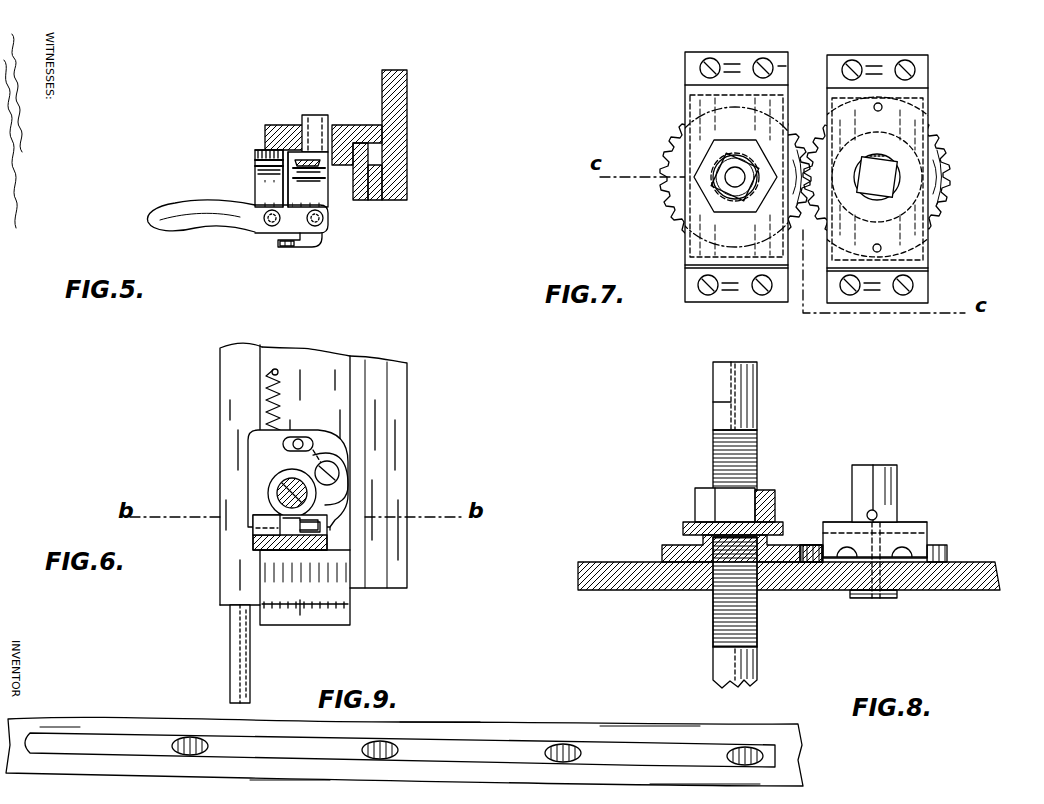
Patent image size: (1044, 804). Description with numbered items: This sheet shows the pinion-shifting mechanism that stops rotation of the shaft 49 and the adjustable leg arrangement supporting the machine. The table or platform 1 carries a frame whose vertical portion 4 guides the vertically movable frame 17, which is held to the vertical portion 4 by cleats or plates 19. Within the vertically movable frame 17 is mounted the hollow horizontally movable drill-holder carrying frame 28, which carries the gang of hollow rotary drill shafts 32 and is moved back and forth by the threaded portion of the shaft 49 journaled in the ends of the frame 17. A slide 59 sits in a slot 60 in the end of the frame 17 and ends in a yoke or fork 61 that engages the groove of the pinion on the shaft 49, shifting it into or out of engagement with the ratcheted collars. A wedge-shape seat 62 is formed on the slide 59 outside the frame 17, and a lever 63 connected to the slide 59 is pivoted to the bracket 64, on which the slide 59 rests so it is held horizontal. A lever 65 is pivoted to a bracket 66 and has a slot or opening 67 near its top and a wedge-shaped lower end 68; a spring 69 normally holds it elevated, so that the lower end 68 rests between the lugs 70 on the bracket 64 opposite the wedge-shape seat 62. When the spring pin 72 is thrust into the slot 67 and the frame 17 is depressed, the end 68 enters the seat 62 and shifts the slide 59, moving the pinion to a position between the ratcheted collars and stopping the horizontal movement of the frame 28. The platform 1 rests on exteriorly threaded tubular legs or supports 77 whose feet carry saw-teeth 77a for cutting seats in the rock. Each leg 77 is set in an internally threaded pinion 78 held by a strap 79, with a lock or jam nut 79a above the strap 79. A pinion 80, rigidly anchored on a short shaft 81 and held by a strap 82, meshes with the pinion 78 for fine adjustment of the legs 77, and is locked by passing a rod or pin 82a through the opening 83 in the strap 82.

In FIG. 8, the table or platform 1 is at (915, 586).
In FIG. 5, the vertical portion of the frame 4 is at (398, 122).
In FIG. 5, the vertically movable frame 17 is at (276, 125).
In FIG. 6, the vertically movable frame 17 is at (300, 365).
In FIG. 5, the cleats or plates 19 is at (362, 200).
In FIG. 6, the horizontally movable drill-holder carrying frame 28 is at (232, 355).
In FIG. 6, the hollow rotary drill shafts 32 is at (234, 644).
In FIG. 6, the shaft 49 is at (280, 494).
In FIG. 5, the slide 59 is at (314, 118).
In FIG. 6, the slide 59 is at (326, 541).
In FIG. 5, the slot 60 is at (334, 125).
In FIG. 5, the yoke or fork 61 is at (300, 246).
In FIG. 5, the wedge-shape seat 62 is at (300, 168).
In FIG. 6, the wedge-shape seat 62 is at (328, 521).
In FIG. 5, the lever 63 is at (238, 222).
In FIG. 5, the bracket 64 is at (256, 190).
In FIG. 6, the bracket 64 is at (292, 547).
In FIG. 6, the lever 65 is at (258, 456).
In FIG. 6, the bracket 66 is at (350, 482).
In FIG. 6, the slot or opening 67 is at (290, 443).
In FIG. 6, the lower wedge-shaped end 68 is at (268, 551).
In FIG. 6, the spring 69 is at (268, 396).
In FIG. 5, the lugs 70 is at (255, 170).
In FIG. 6, the lugs 70 is at (256, 524).
In FIG. 6, the spring pin 72 is at (326, 434).
In FIG. 7, the tubular legs or supports 77 is at (718, 180).
In FIG. 8, the tubular legs or supports 77 is at (757, 644).
In FIG. 8, the saw-teeth 77a is at (730, 686).
In FIG. 7, the internally screw-threaded pinion 78 is at (672, 156).
In FIG. 8, the internally screw-threaded pinion 78 is at (680, 550).
In FIG. 7, the strap 79 is at (690, 244).
In FIG. 8, the strap 79 is at (702, 522).
In FIG. 8, the lock or jam nut 79a is at (773, 490).
In FIG. 7, the pinion 80 is at (948, 176).
In FIG. 8, the pinion 80 is at (947, 553).
In FIG. 7, the short shaft 81 is at (882, 178).
In FIG. 8, the short shaft 81 is at (895, 500).
In FIG. 7, the strap 82 is at (915, 110).
In FIG. 8, the strap 82 is at (915, 530).
In FIG. 8, the rod or pin 82a is at (913, 522).
In FIG. 7, the opening 83 is at (884, 248).